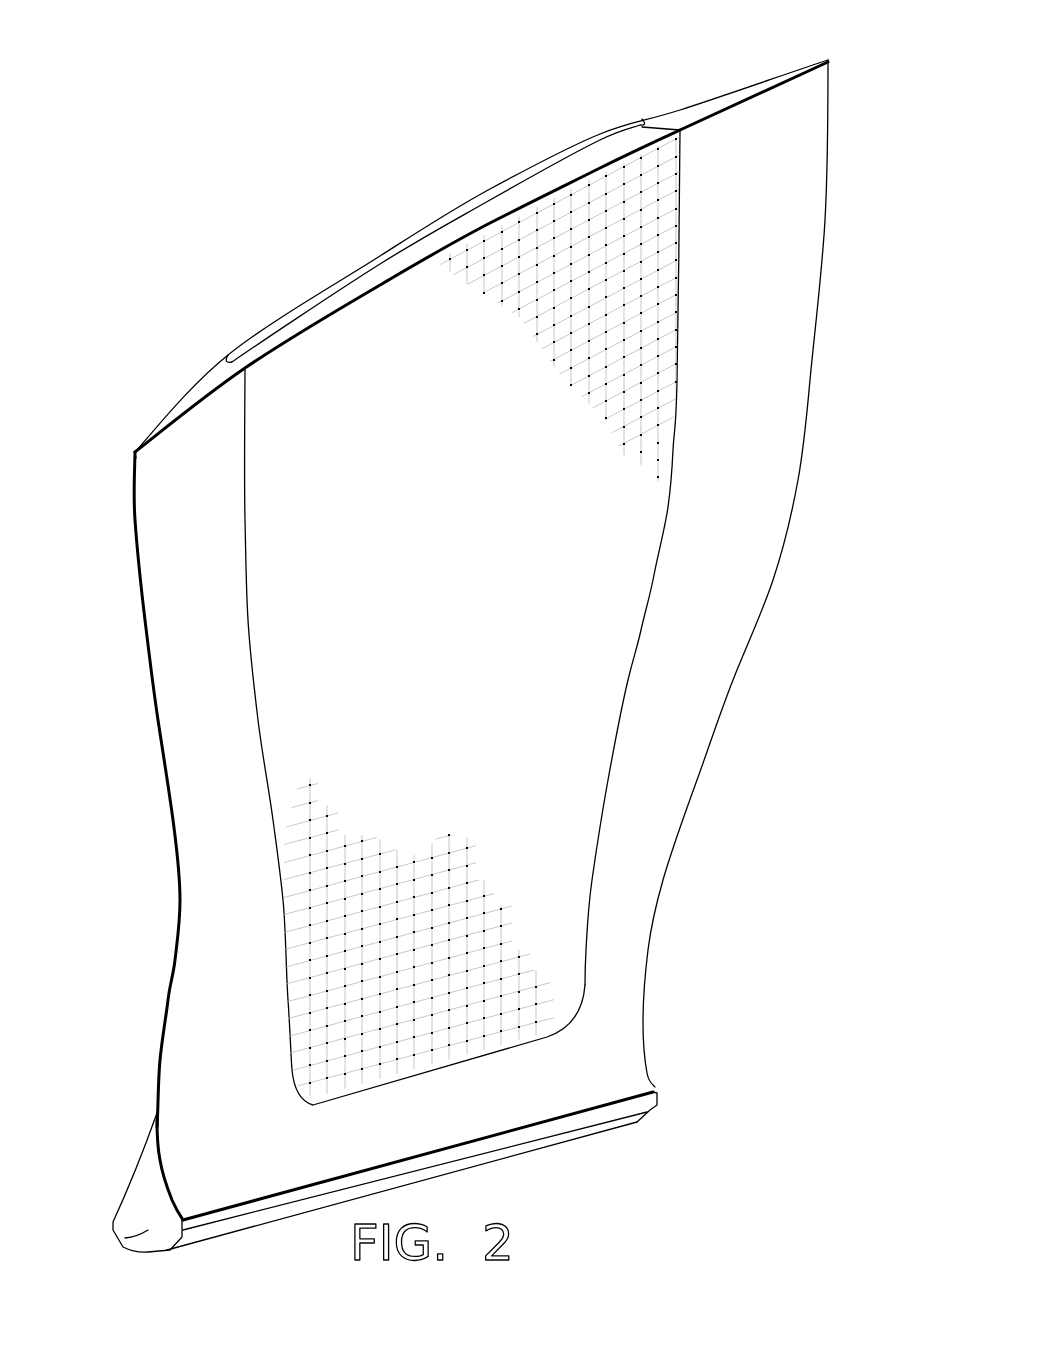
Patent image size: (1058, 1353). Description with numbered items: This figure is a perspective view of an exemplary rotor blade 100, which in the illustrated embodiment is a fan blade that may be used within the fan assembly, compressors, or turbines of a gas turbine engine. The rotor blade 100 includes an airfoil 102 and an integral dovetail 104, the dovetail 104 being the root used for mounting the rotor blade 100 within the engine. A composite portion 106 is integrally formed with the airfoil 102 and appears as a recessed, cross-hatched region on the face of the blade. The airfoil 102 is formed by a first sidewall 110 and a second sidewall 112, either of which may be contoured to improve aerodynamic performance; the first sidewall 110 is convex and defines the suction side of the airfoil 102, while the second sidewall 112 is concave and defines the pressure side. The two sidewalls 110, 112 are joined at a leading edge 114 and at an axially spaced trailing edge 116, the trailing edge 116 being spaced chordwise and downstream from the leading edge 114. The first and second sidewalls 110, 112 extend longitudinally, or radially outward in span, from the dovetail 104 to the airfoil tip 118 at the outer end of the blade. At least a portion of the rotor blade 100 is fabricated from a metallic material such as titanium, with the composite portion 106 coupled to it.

The rotor blade 100 is at (812, 44).
The airfoil 102 is at (474, 640).
The dovetail 104 is at (125, 1238).
The composite portion 106 is at (263, 333).
The first sidewall 110 is at (178, 405).
The second sidewall 112 is at (157, 470).
The leading edge 114 is at (828, 113).
The trailing edge 116 is at (135, 452).
The airfoil tip 118 is at (680, 115).